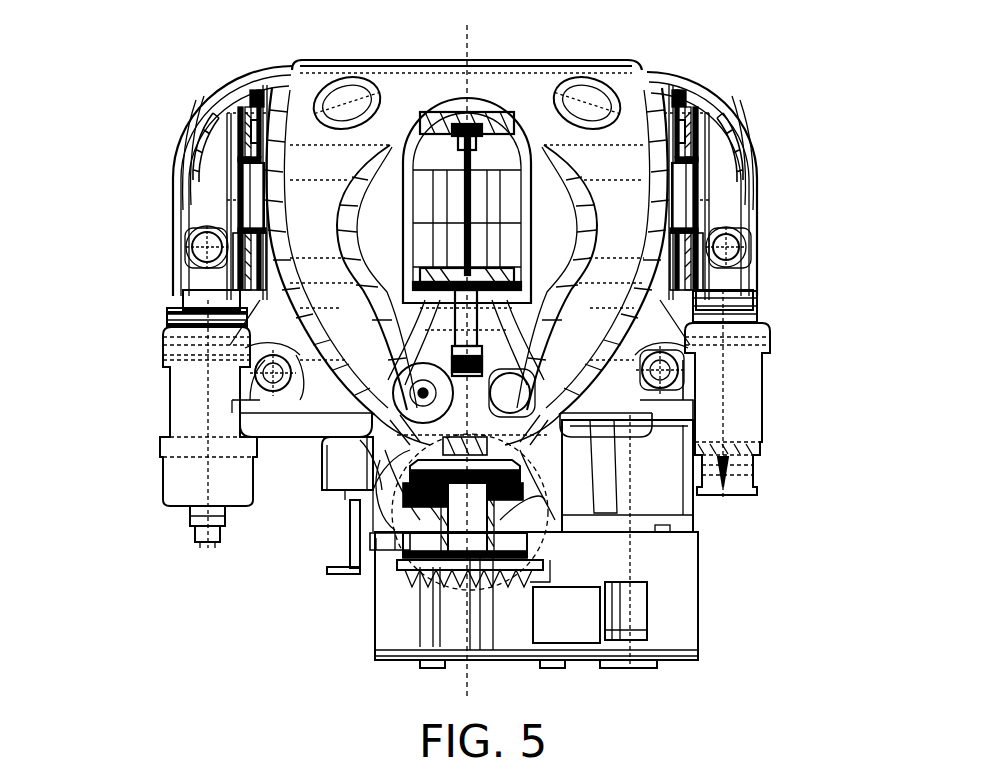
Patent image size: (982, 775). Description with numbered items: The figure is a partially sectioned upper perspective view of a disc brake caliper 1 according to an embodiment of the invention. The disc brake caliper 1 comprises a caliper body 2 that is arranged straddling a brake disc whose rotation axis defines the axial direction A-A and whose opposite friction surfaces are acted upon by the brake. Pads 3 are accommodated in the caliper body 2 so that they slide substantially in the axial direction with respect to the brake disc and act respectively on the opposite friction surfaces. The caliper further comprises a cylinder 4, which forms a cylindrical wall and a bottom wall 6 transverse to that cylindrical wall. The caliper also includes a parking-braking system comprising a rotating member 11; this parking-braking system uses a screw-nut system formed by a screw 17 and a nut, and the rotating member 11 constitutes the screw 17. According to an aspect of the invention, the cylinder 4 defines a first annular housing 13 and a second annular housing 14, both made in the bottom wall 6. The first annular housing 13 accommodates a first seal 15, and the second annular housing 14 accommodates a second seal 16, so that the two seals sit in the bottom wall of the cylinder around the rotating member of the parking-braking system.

The disc brake caliper 1 is at (148, 260).
The caliper body 2 is at (620, 217).
The pads 3 is at (452, 247).
The cylinder 4 is at (596, 541).
The bottom wall 6 is at (510, 513).
The rotating member 11 is at (606, 532).
The screw 17 is at (557, 535).
The first annular housing 13 is at (321, 527).
The first seal 15 is at (373, 548).
The second annular housing 14 is at (419, 559).
The second seal 16 is at (400, 547).